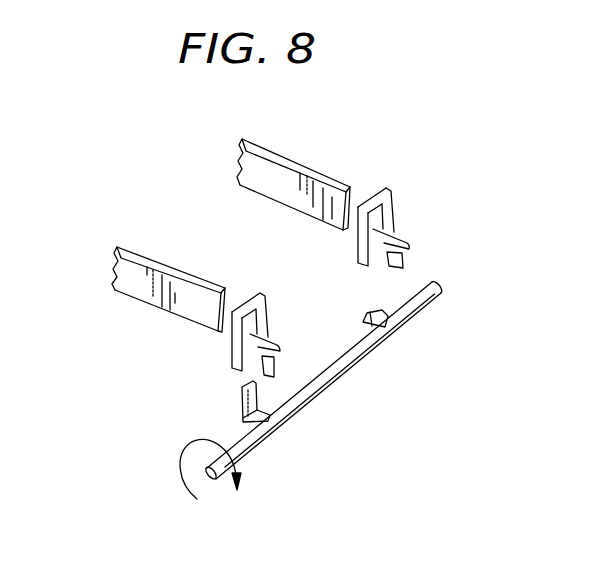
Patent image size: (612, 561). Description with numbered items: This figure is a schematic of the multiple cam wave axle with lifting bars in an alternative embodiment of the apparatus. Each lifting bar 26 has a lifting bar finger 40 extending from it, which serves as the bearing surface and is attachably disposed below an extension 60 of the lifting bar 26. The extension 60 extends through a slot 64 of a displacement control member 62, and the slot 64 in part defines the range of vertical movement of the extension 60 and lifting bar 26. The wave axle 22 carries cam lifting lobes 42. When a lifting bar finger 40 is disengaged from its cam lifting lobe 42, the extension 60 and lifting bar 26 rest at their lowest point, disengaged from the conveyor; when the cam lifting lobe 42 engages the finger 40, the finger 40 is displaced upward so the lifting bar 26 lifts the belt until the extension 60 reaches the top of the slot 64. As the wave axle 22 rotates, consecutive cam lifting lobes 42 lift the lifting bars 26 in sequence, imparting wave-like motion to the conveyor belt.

The wave axle 22 is at (335, 384).
The lifting bar 26 is at (276, 153).
The lifting bar finger 40 is at (405, 258).
The cam lifting lobe 42 is at (241, 407).
The extension 60 is at (405, 196).
The displacement control member 62 is at (373, 189).
The slot 64 is at (268, 325).